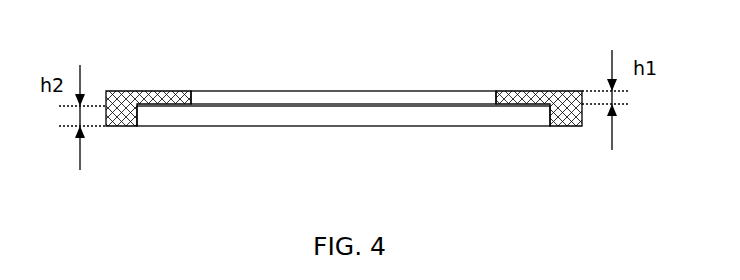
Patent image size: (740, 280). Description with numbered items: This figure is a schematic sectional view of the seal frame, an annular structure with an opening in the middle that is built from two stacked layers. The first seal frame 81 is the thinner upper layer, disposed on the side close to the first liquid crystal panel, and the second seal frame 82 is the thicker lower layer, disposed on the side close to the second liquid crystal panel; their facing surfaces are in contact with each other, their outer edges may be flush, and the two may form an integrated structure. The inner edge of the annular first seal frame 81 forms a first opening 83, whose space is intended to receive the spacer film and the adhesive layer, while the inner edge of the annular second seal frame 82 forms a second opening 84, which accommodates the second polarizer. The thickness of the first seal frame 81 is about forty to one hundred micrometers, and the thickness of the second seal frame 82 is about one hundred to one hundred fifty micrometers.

The first seal frame 81 is at (523, 97).
The second seal frame 82 is at (121, 112).
The first opening 83 is at (488, 96).
The second opening 84 is at (167, 123).